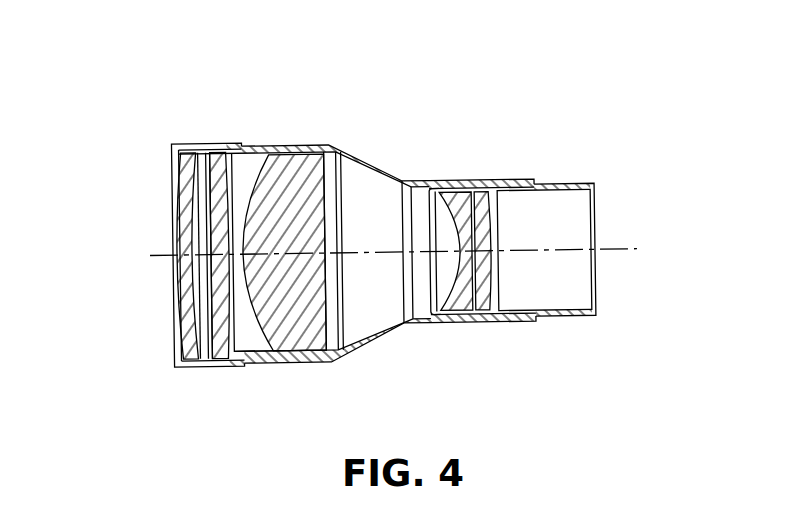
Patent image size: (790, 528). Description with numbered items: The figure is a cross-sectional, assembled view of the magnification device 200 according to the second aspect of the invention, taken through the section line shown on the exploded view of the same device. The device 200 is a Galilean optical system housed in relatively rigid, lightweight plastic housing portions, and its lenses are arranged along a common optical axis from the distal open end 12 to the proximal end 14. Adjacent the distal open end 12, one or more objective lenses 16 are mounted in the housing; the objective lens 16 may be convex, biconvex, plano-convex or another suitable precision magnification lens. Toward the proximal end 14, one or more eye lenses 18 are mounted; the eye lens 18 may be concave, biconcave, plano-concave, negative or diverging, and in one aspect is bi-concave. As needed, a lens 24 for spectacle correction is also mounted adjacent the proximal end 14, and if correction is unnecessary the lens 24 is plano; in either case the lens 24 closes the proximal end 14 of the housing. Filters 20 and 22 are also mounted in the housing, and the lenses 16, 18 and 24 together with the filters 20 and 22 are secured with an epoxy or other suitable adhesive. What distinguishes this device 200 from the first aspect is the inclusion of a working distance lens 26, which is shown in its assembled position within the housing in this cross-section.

The distal open end 12 is at (118, 220).
The magnification device 200 is at (297, 108).
The proximal end 14 is at (617, 224).
The objective lens 16 is at (320, 157).
The eye lens 18 is at (445, 217).
The filter 20 is at (191, 352).
The filter 22 is at (481, 307).
The spectacle correction lens 24 is at (490, 198).
The working distance lens 26 is at (224, 347).